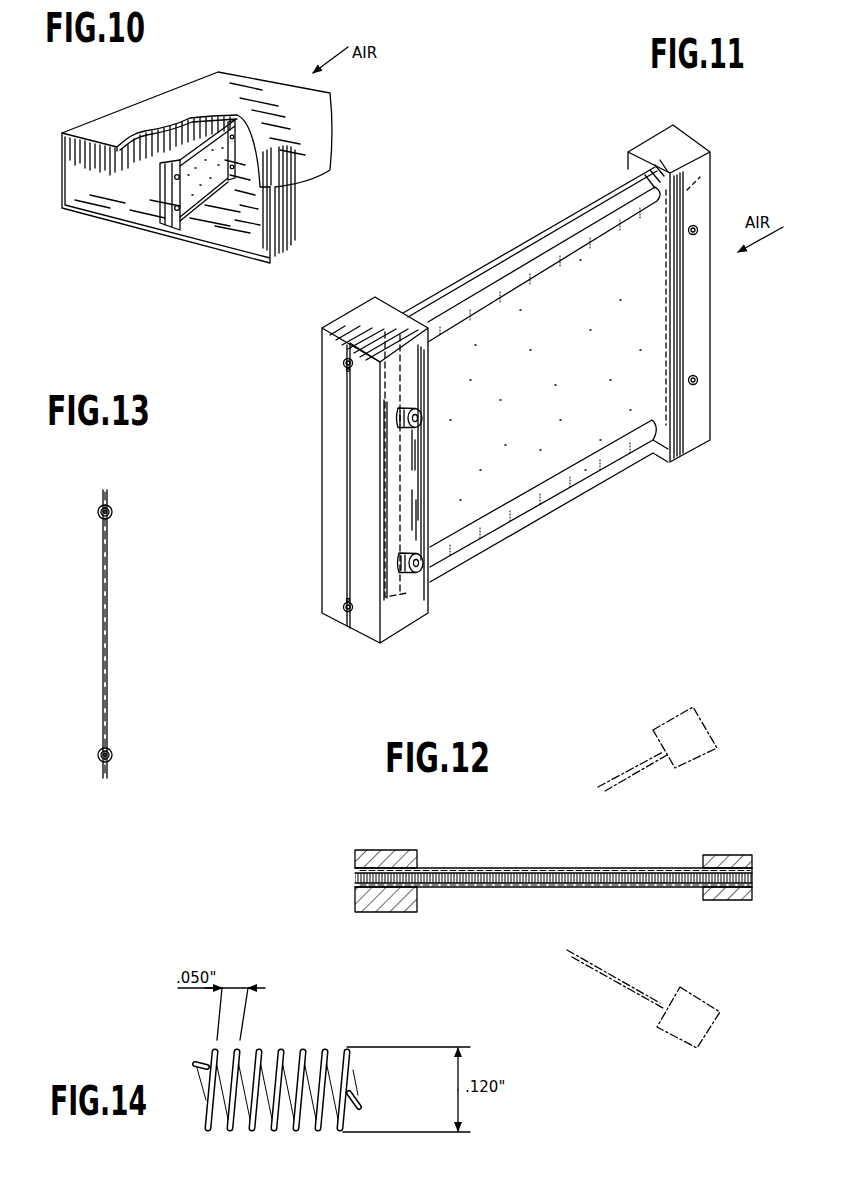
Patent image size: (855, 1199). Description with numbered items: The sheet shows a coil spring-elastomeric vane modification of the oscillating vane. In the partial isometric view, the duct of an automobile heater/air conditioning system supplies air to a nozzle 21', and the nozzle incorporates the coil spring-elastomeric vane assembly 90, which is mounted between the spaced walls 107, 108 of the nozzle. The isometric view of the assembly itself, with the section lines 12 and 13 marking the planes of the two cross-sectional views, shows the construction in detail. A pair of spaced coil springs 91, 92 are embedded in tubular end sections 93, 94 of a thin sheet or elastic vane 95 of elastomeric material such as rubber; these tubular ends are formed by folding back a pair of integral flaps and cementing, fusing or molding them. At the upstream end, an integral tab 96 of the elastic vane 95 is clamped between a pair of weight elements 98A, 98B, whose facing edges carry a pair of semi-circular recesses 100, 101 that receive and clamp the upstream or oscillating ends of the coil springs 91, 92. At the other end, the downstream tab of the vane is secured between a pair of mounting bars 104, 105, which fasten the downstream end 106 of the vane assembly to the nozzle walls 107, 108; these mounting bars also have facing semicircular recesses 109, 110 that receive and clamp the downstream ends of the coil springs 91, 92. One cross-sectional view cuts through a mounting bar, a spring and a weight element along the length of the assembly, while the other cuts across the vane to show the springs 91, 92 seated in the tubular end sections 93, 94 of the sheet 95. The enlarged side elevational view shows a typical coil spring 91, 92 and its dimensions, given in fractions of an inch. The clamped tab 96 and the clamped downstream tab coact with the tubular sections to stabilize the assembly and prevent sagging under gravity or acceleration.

In FIG. 10, the coil spring-elastomeric vane assembly 90 is at (193, 131).
In FIG. 11, the coil spring-elastomeric vane assembly 90 is at (596, 549).
In FIG. 10, the nozzle wall 108 is at (92, 147).
In FIG. 10, the nozzle wall 107 is at (213, 233).
In FIG. 10, the nozzle 21' is at (198, 167).
In FIG. 11, the mounting bar 105 is at (340, 317).
In FIG. 12, the mounting bar 105 is at (380, 850).
In FIG. 11, the mounting bar 104 is at (415, 613).
In FIG. 12, the mounting bar 104 is at (403, 912).
In FIG. 11, the downstream end of the vane assembly 106 is at (368, 475).
In FIG. 11, the tubular end section 93 is at (595, 282).
In FIG. 13, the tubular end section 93 is at (100, 604).
In FIG. 11, the coil spring 91 is at (343, 362).
In FIG. 13, the coil spring 91 is at (98, 512).
In FIG. 14, the coil spring 91 is at (250, 1130).
In FIG. 11, the coil spring 92 is at (343, 609).
In FIG. 13, the coil spring 92 is at (98, 755).
In FIG. 12, the coil spring 92 is at (555, 877).
In FIG. 14, the coil spring 92 is at (250, 1130).
In FIG. 11, the semicircular recess 109 is at (347, 368).
In FIG. 12, the semicircular recess 109 is at (400, 866).
In FIG. 11, the semicircular recess 110 is at (382, 382).
In FIG. 12, the semicircular recess 110 is at (368, 912).
In FIG. 11, the tubular end section 94 is at (612, 183).
In FIG. 13, the tubular end section 94 is at (105, 490).
In FIG. 11, the elastic vane 95 is at (607, 483).
In FIG. 13, the elastic vane 95 is at (105, 778).
In FIG. 11, the semi-circular recess 100 is at (673, 440).
In FIG. 12, the semi-circular recess 100 is at (715, 900).
In FIG. 11, the weight element 98A is at (700, 207).
In FIG. 12, the weight element 98A is at (725, 900).
In FIG. 11, the weight element 98B is at (660, 137).
In FIG. 12, the weight element 98B is at (718, 855).
In FIG. 11, the upstream tab 96 is at (687, 190).
In FIG. 12, the semi-circular recess 101 is at (752, 868).
In FIG. 11, the section line 12 is at (305, 633).
In FIG. 11, the section line 13 is at (513, 196).